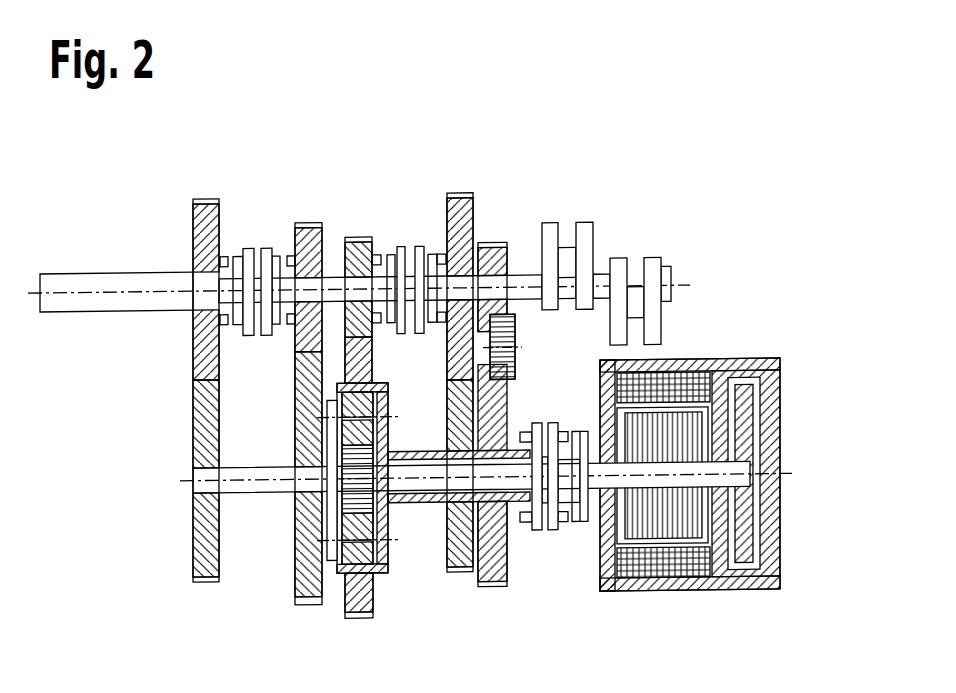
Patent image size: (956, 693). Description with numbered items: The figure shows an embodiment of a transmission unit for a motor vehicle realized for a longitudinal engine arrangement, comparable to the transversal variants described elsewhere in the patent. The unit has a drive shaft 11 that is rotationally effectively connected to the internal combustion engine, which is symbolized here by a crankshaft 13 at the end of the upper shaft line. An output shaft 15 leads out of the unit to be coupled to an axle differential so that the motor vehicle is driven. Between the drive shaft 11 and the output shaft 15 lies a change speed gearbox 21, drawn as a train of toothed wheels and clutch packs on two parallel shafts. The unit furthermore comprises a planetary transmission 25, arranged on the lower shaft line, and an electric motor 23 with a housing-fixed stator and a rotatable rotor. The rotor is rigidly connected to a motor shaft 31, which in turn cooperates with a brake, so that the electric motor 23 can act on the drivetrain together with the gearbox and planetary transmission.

The drive shaft 11 is at (522, 278).
The crankshaft 13 is at (600, 279).
The output shaft 15 is at (90, 279).
The change speed gearbox 21 is at (393, 174).
The electric motor 23 is at (792, 384).
The planetary transmission 25 is at (382, 608).
The motor shaft 31 is at (740, 483).